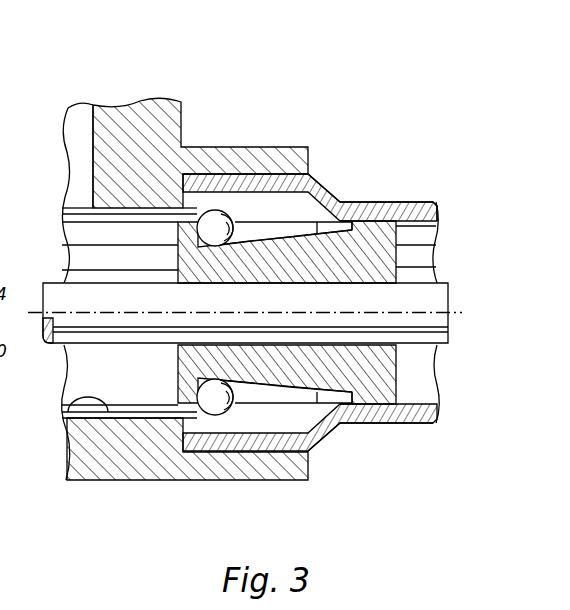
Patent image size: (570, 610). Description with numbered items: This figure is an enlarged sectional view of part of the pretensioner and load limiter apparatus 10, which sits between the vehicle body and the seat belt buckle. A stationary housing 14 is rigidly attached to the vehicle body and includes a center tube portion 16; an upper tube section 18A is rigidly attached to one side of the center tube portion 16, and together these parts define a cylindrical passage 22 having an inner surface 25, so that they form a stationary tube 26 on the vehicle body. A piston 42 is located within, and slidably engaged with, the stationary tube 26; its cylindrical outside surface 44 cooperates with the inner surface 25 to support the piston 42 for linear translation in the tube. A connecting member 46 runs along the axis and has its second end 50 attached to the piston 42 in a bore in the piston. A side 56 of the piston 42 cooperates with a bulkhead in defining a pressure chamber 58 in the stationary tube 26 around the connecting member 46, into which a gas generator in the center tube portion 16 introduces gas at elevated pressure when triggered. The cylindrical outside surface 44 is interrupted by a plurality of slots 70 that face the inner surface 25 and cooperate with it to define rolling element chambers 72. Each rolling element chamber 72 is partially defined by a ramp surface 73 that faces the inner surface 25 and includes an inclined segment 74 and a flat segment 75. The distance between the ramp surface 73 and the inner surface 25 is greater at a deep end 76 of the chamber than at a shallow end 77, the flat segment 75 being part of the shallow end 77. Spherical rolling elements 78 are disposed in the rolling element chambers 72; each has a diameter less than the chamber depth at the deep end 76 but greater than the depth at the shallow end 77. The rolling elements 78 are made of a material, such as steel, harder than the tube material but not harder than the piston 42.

The pretensioner and load limiter apparatus 10 is at (367, 75).
The stationary housing 14 is at (213, 73).
The center tube portion 16 is at (207, 147).
The upper tube section 18A is at (433, 203).
The cylindrical passage 22 is at (62, 413).
The inner surface 25 is at (418, 392).
The stationary tube 26 is at (53, 277).
The piston 42 is at (388, 258).
The cylindrical outside surface 44 is at (405, 203).
The connecting member 46 is at (122, 348).
The second end 50 is at (442, 327).
The side 56 is at (177, 388).
The pressure chamber 58 is at (133, 232).
The slots 70 is at (322, 200).
The rolling element chambers 72 is at (298, 225).
The ramp surface 73 is at (318, 222).
The inclined segment 74 is at (285, 220).
The flat segment 75 is at (352, 203).
The deep end 76 is at (247, 222).
The shallow end 77 is at (360, 227).
The spherical rolling elements 78 is at (215, 227).